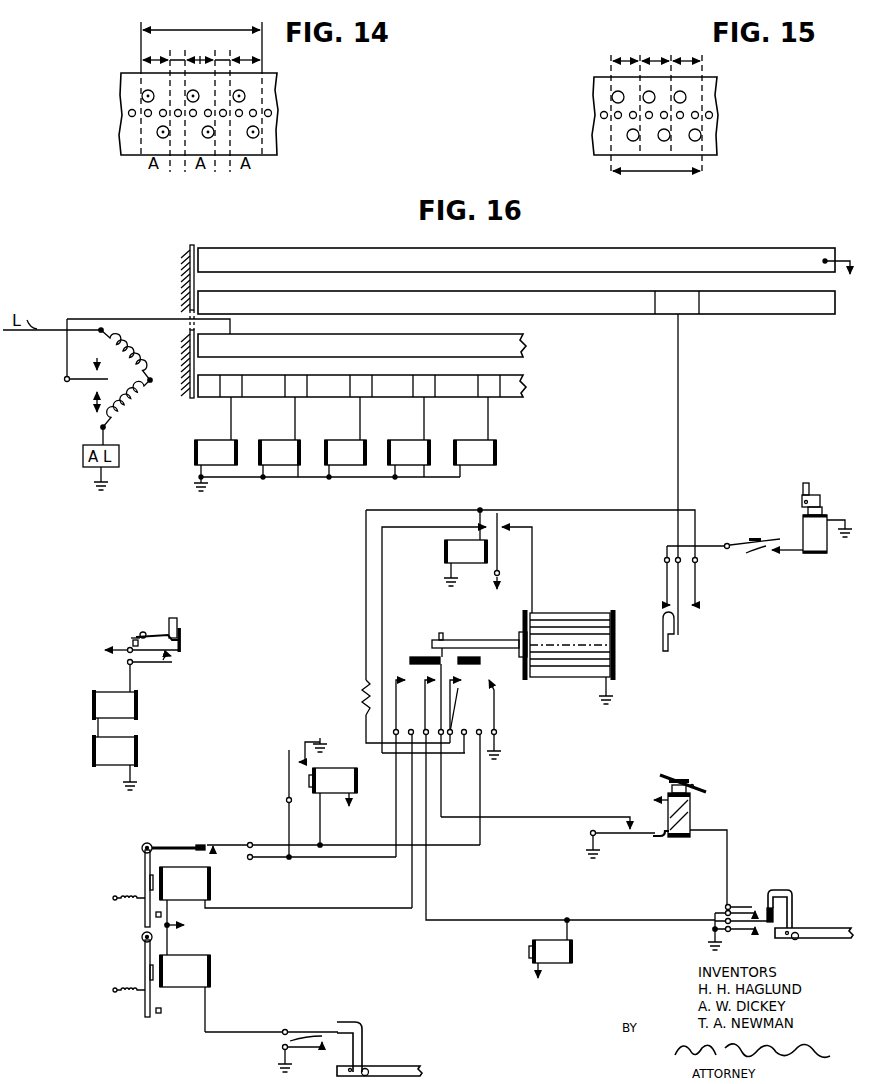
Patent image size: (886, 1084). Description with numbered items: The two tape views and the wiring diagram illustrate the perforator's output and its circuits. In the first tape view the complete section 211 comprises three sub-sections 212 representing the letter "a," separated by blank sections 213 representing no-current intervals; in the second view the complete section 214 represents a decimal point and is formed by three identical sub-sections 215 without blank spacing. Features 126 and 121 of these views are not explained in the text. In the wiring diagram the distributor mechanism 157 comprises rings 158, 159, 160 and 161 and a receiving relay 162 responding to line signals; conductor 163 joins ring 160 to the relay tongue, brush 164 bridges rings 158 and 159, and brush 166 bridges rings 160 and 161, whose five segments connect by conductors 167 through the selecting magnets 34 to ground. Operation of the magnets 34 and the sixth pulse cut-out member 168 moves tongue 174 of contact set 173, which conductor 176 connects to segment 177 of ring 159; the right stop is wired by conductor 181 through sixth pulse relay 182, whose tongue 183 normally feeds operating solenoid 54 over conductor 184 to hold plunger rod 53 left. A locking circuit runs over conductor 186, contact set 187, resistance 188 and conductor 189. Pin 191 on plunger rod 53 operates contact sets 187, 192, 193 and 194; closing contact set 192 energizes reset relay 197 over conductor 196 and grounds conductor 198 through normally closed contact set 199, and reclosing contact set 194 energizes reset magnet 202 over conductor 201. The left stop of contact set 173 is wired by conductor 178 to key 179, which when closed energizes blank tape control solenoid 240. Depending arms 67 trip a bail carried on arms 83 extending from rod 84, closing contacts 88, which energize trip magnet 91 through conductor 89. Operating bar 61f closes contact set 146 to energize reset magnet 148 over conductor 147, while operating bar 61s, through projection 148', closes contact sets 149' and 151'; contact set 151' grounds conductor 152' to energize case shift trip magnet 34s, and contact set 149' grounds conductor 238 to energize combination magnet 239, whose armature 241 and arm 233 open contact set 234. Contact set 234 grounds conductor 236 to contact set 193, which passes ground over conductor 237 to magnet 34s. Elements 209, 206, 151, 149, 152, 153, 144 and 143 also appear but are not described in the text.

In FIG. 14, the complete section 211 is at (214, 30).
In FIG. 14, the sub-sections 212 is at (245, 62).
In FIG. 14, the blank sections 213 is at (212, 180).
In FIG. 15, the complete section 214 is at (676, 172).
In FIG. 15, the sub-sections 215 is at (694, 62).
In FIG. 14, the holes 126 is at (256, 110).
In FIG. 15, the holes 126 is at (632, 119).
In FIG. 14, the perforated tape 121 is at (273, 138).
In FIG. 15, the perforated tape 121 is at (718, 138).
In FIG. 16, the ring 158 is at (279, 257).
In FIG. 16, the ring 159 is at (279, 300).
In FIG. 16, the ring 160 is at (279, 343).
In FIG. 16, the ring 161 is at (279, 384).
In FIG. 16, the brush 164 is at (190, 275).
In FIG. 16, the conductor 163 is at (132, 320).
In FIG. 16, the brush 166 is at (186, 358).
In FIG. 16, the receiving relay 162 is at (134, 385).
In FIG. 16, the conductors 167 is at (496, 420).
In FIG. 16, the selecting magnets 34 is at (468, 487).
In FIG. 16, the segment 177 is at (687, 310).
In FIG. 16, the distributor mechanism 157 is at (760, 343).
In FIG. 16, the conductor 176 is at (680, 418).
In FIG. 16, the conductor 181 is at (594, 508).
In FIG. 16, the sixth pulse relay 182 is at (446, 548).
In FIG. 16, the tongue 183 is at (500, 535).
In FIG. 16, the conductor 184 is at (532, 578).
In FIG. 16, the conductor 186 is at (384, 578).
In FIG. 16, the conductor 189 is at (364, 578).
In FIG. 16, the resistance 188 is at (362, 697).
In FIG. 16, the contact set 173 is at (658, 576).
In FIG. 16, the tongue 174 is at (680, 612).
In FIG. 16, the sixth pulse cut-out member 168 is at (670, 640).
In FIG. 16, the conductor 178 is at (712, 540).
In FIG. 16, the key 179 is at (762, 561).
In FIG. 16, the blank tape control solenoid 240 is at (812, 553).
In FIG. 16, the operating solenoid 54 is at (584, 603).
In FIG. 16, the plunger rod 53 is at (473, 641).
In FIG. 16, the pin 191 is at (445, 637).
In FIG. 16, the contact set 193 is at (432, 656).
In FIG. 16, the contact set 194 is at (400, 680).
In FIG. 16, the contact set 192 is at (493, 683).
In FIG. 16, the contact set 187 is at (458, 775).
In FIG. 16, the rod 84 is at (146, 632).
In FIG. 16, the depending arms 67 is at (170, 622).
In FIG. 16, the horizontal arms 83 is at (182, 645).
In FIG. 16, the contact springs 88 is at (150, 672).
In FIG. 16, the conductor 89 is at (128, 678).
In FIG. 16, the trip magnet 91 is at (132, 705).
In FIG. 16, the reset relay 197 is at (332, 767).
In FIG. 16, the conductor 196 is at (340, 855).
In FIG. 16, the conductor 198 is at (276, 843).
In FIG. 16, the contact set 199 is at (222, 850).
In FIG. 16, the pivot 209 is at (185, 846).
In FIG. 16, the lever 206 is at (145, 870).
In FIG. 16, the reset magnet 202 is at (210, 888).
In FIG. 16, the conductor 201 is at (290, 910).
In FIG. 16, the pivot 151 is at (123, 933).
In FIG. 16, the lever 149 is at (124, 978).
In FIG. 16, the spring 152 is at (118, 1001).
In FIG. 16, the contact 153 is at (155, 1020).
In FIG. 16, the case shift selector bar reset magnet 148 is at (203, 959).
In FIG. 16, the conductor 147 is at (206, 1010).
In FIG. 16, the conductor 144 is at (333, 1030).
In FIG. 16, the contact set 146 is at (286, 1054).
In FIG. 16, the contact bracket 143 is at (363, 1030).
In FIG. 16, the figures operating bar 61f is at (388, 1066).
In FIG. 16, the conductor 236 is at (535, 818).
In FIG. 16, the contact set 234 is at (618, 831).
In FIG. 16, the combination magnet 239 is at (662, 838).
In FIG. 16, the arm 233 is at (700, 790).
In FIG. 16, the armature 241 is at (700, 779).
In FIG. 16, the conductor 238 is at (727, 853).
In FIG. 16, the conductor 237 is at (492, 921).
In FIG. 16, the case shift trip magnet 34s is at (550, 963).
In FIG. 16, the conductor 152' is at (671, 928).
In FIG. 16, the contact set 149' is at (749, 894).
In FIG. 16, the contact set 151' is at (751, 935).
In FIG. 16, the leftwardly extending projection 148' is at (804, 895).
In FIG. 16, the letters shift operating bar 61s is at (813, 928).